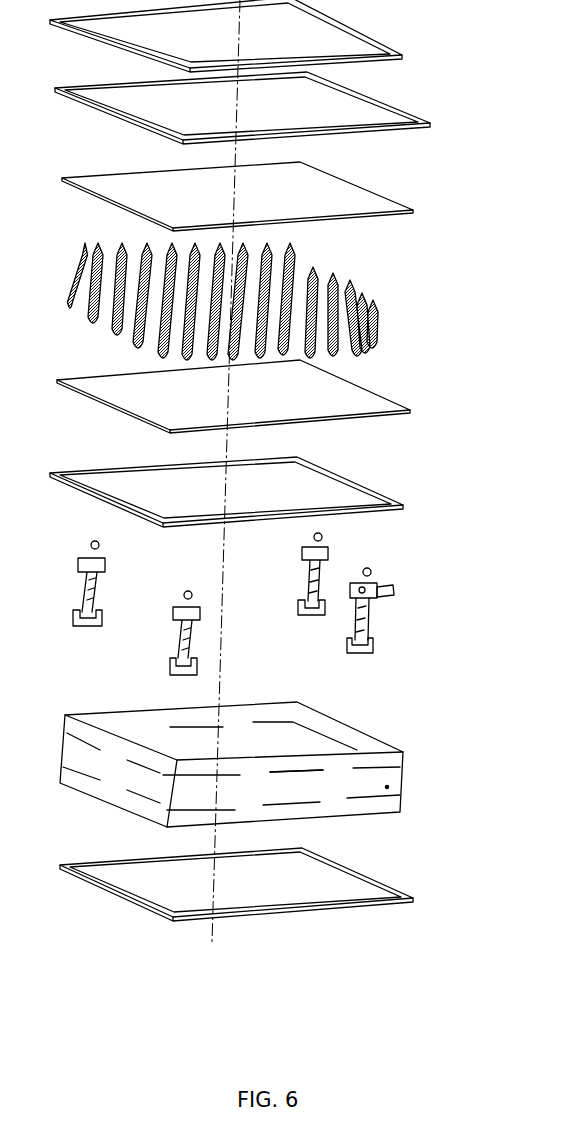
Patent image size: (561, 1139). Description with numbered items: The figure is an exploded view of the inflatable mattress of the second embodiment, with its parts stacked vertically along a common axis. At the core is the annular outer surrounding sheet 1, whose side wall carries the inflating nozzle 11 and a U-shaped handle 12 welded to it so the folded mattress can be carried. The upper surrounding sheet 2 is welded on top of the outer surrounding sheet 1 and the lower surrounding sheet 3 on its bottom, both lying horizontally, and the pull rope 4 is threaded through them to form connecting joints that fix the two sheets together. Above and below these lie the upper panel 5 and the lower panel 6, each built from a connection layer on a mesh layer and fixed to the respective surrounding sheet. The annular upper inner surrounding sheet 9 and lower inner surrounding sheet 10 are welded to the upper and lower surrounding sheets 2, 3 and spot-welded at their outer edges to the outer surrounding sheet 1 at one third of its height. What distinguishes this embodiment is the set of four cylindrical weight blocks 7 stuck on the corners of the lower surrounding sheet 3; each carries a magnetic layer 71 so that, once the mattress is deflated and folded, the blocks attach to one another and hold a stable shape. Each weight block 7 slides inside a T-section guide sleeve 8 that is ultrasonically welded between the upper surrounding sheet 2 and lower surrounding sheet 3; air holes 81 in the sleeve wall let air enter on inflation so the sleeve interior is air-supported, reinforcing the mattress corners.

The outer surrounding sheet 1 is at (340, 748).
The upper surrounding sheet 2 is at (390, 42).
The lower surrounding sheet 3 is at (397, 885).
The pull rope 4 is at (374, 307).
The upper panel 5 is at (387, 202).
The lower panel 6 is at (383, 397).
The weight block 7 is at (372, 568).
The guide sleeve 8 is at (368, 637).
The upper inner surrounding sheet 9 is at (400, 108).
The lower inner surrounding sheet 10 is at (377, 488).
The inflating nozzle 11 is at (403, 782).
The handle 12 is at (275, 788).
The magnetic layer 71 is at (325, 539).
The air hole 81 is at (393, 590).